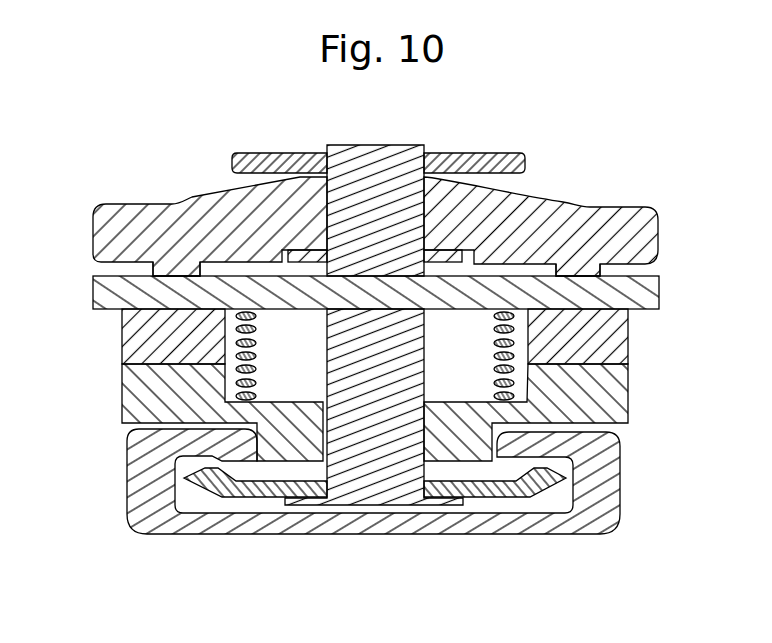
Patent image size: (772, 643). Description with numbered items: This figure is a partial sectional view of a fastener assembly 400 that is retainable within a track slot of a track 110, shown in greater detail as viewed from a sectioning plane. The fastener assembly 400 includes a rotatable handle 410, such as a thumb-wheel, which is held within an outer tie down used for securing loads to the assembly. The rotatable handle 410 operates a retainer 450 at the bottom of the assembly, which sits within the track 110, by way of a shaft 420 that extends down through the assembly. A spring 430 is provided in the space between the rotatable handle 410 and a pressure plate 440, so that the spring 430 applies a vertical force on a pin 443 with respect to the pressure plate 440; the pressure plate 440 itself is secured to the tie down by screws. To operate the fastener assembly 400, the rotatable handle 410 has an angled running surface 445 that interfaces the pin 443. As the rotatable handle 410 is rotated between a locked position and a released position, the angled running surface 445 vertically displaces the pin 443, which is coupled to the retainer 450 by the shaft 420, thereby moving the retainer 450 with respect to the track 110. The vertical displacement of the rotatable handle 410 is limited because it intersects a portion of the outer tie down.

The fastener assembly 400 is at (603, 160).
The rotatable handle 410 is at (645, 235).
The pin 443 is at (648, 300).
The angled running surface 445 is at (172, 278).
The pressure plate 440 is at (612, 406).
The spring 430 is at (492, 366).
The track 110 is at (621, 488).
The retainer 450 is at (240, 493).
The shaft 420 is at (390, 490).